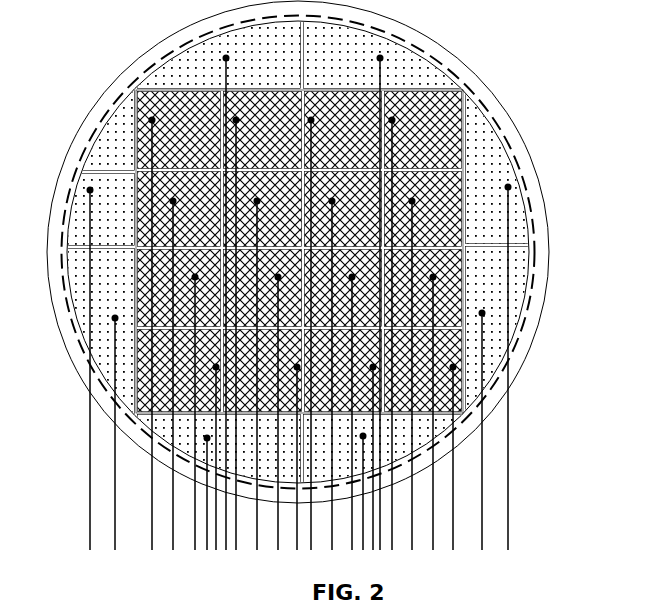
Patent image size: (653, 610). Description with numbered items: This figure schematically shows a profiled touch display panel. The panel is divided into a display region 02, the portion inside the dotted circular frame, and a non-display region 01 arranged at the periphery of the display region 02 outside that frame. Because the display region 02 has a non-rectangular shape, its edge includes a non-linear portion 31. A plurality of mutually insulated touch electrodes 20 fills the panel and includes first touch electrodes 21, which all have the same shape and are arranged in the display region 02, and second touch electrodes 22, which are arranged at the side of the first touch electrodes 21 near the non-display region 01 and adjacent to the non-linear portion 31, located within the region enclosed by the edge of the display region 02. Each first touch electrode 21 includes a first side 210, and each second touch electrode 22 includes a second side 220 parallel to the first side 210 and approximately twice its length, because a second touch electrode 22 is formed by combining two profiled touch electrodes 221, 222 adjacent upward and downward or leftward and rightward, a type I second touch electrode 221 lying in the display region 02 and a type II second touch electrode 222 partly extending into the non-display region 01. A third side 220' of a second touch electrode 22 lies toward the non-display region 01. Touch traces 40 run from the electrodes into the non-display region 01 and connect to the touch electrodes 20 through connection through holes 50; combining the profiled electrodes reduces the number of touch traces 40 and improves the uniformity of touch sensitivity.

The non-display region 01 is at (440, 53).
The display region 02 is at (465, 90).
The touch electrodes 20 is at (600, 137).
The first touch electrode 21 is at (433, 148).
The second touch electrode 22 is at (490, 205).
The non-linear portion 31 is at (70, 340).
The touch trace 40 is at (90, 477).
The connection through hole 50 is at (111, 318).
The first side 210 is at (453, 342).
The second side 220 is at (537, 370).
The third side 220' is at (444, 455).
The type I second touch electrode 221 is at (107, 210).
The type II second touch electrode 222 is at (103, 138).